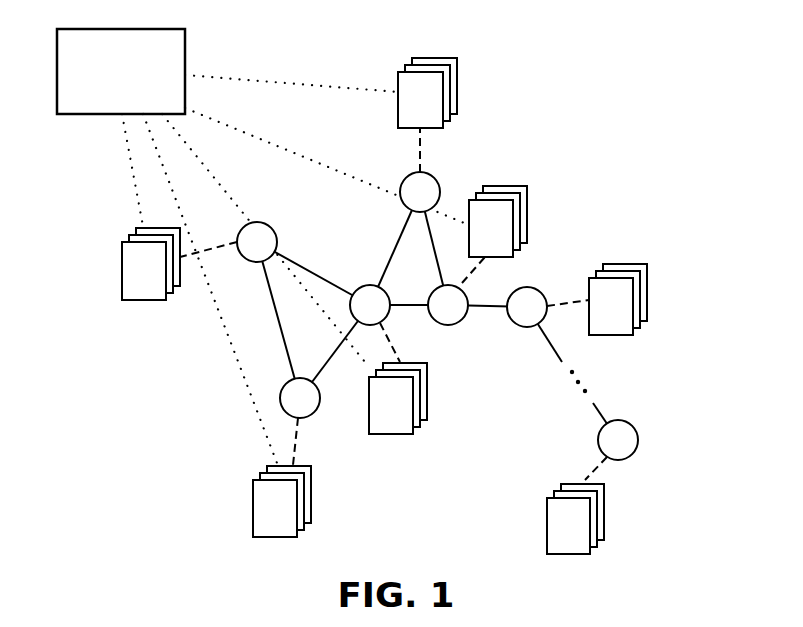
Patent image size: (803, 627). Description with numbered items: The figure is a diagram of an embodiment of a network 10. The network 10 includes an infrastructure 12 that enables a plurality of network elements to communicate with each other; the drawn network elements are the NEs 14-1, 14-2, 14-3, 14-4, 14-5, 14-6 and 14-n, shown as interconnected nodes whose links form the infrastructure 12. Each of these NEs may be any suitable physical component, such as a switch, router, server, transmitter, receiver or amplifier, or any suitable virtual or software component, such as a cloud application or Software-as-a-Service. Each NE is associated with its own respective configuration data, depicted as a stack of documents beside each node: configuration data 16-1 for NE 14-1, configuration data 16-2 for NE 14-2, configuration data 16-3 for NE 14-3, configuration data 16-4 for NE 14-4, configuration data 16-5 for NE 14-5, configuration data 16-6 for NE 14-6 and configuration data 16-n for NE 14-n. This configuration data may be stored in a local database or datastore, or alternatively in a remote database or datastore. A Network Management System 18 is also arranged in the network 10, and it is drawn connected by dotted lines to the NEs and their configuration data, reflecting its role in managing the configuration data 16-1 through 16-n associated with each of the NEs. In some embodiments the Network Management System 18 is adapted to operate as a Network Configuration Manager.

The network 10 is at (379, 291).
The infrastructure 12 is at (438, 304).
The network element 14-1 is at (250, 222).
The network element 14-2 is at (405, 178).
The network element 14-3 is at (285, 414).
The network element 14-4 is at (362, 286).
The network element 14-5 is at (448, 327).
The network element 14-6 is at (527, 287).
The network element 14-n is at (640, 443).
The configuration data 16-1 is at (143, 300).
The configuration data 16-2 is at (457, 88).
The configuration data 16-3 is at (253, 510).
The configuration data 16-4 is at (390, 434).
The configuration data 16-5 is at (503, 185).
The configuration data 16-6 is at (648, 292).
The configuration data 16-n is at (547, 527).
The Network Management System 18 is at (166, 103).